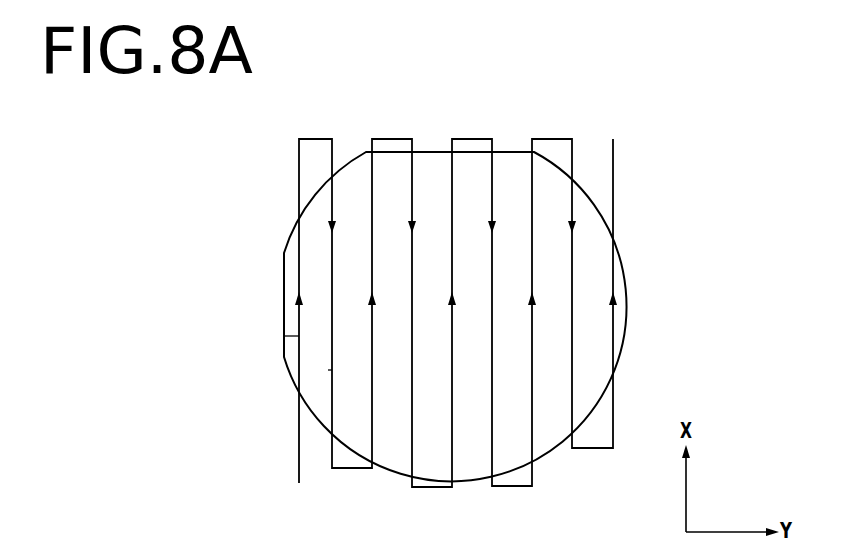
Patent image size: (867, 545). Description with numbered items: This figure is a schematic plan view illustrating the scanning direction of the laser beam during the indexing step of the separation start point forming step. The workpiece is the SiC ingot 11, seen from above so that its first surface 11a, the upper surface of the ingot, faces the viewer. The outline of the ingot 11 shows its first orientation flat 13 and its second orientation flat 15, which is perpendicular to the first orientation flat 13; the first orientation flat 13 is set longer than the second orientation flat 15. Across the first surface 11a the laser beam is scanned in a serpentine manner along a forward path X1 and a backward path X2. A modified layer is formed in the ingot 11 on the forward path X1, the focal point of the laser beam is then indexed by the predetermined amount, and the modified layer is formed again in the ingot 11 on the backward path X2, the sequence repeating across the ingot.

The SiC ingot 11 is at (618, 200).
The first surface 11a is at (618, 322).
The first orientation flat 13 is at (433, 150).
The second orientation flat 15 is at (284, 307).
The forward path X1 is at (283, 336).
The backward path X2 is at (328, 370).